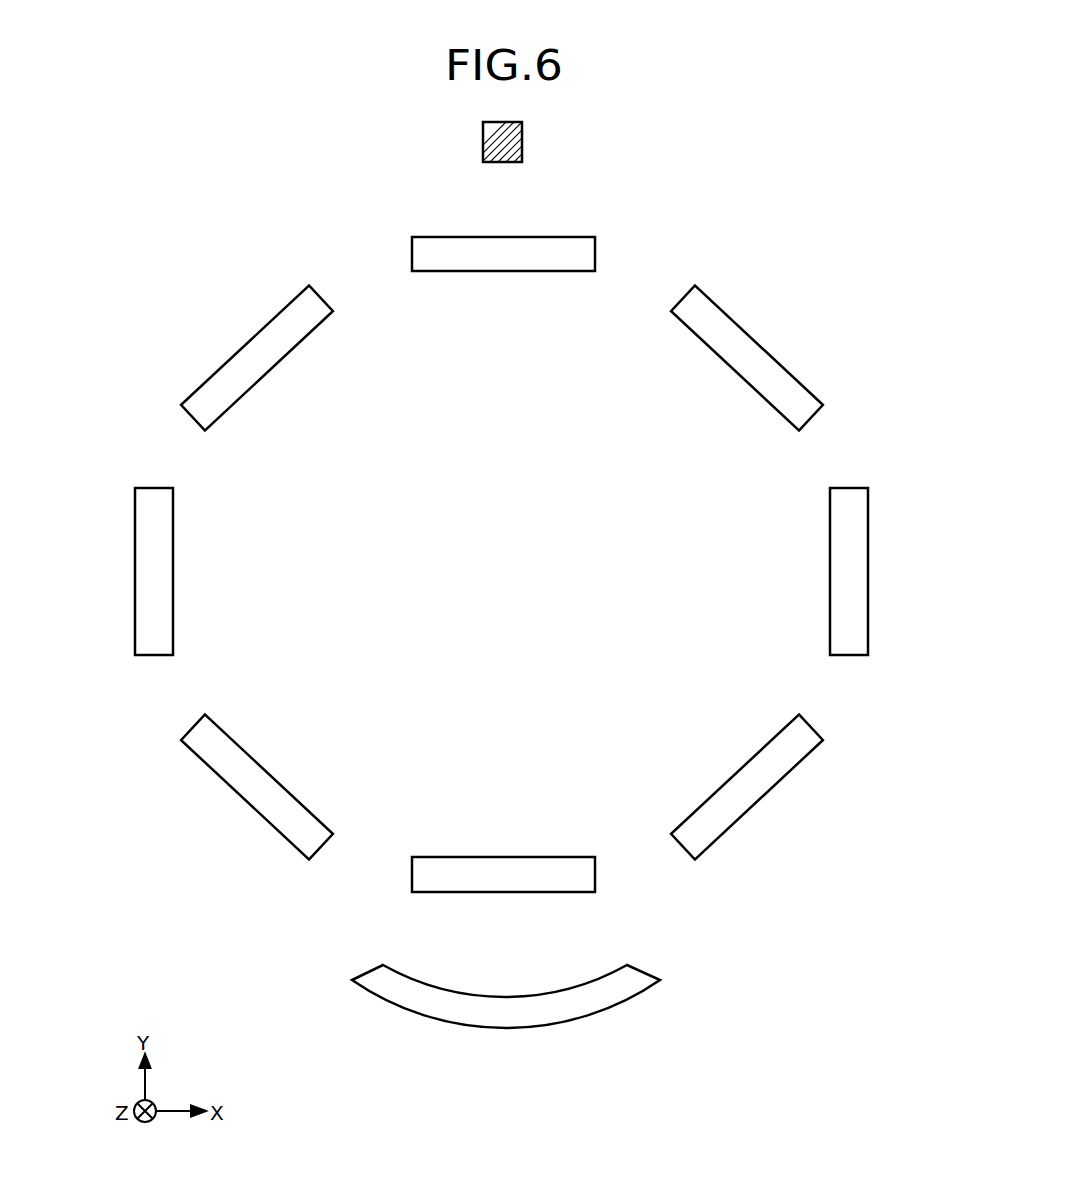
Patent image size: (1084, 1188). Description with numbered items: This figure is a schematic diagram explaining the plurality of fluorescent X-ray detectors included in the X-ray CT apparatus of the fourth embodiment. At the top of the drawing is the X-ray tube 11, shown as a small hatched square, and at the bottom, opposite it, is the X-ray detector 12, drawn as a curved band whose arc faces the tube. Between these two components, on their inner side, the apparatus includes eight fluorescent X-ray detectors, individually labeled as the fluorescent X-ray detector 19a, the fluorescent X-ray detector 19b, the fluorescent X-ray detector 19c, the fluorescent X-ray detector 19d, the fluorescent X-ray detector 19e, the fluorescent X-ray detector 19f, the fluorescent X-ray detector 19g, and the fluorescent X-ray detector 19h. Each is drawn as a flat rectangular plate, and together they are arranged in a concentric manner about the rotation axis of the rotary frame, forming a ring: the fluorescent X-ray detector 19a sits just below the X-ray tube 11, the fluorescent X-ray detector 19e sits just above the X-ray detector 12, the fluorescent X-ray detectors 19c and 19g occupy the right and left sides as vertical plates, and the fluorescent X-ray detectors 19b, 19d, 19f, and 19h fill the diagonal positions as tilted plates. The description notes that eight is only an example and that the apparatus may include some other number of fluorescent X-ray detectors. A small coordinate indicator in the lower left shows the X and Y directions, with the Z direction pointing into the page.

The X-ray tube 11 is at (522, 142).
The X-ray detector 12 is at (503, 1028).
The fluorescent X-ray detector 19a is at (507, 237).
The fluorescent X-ray detector 19b is at (748, 331).
The fluorescent X-ray detector 19c is at (830, 570).
The fluorescent X-ray detector 19d is at (768, 792).
The fluorescent X-ray detector 19e is at (502, 893).
The fluorescent X-ray detector 19f is at (245, 800).
The fluorescent X-ray detector 19g is at (173, 575).
The fluorescent X-ray detector 19h is at (258, 333).